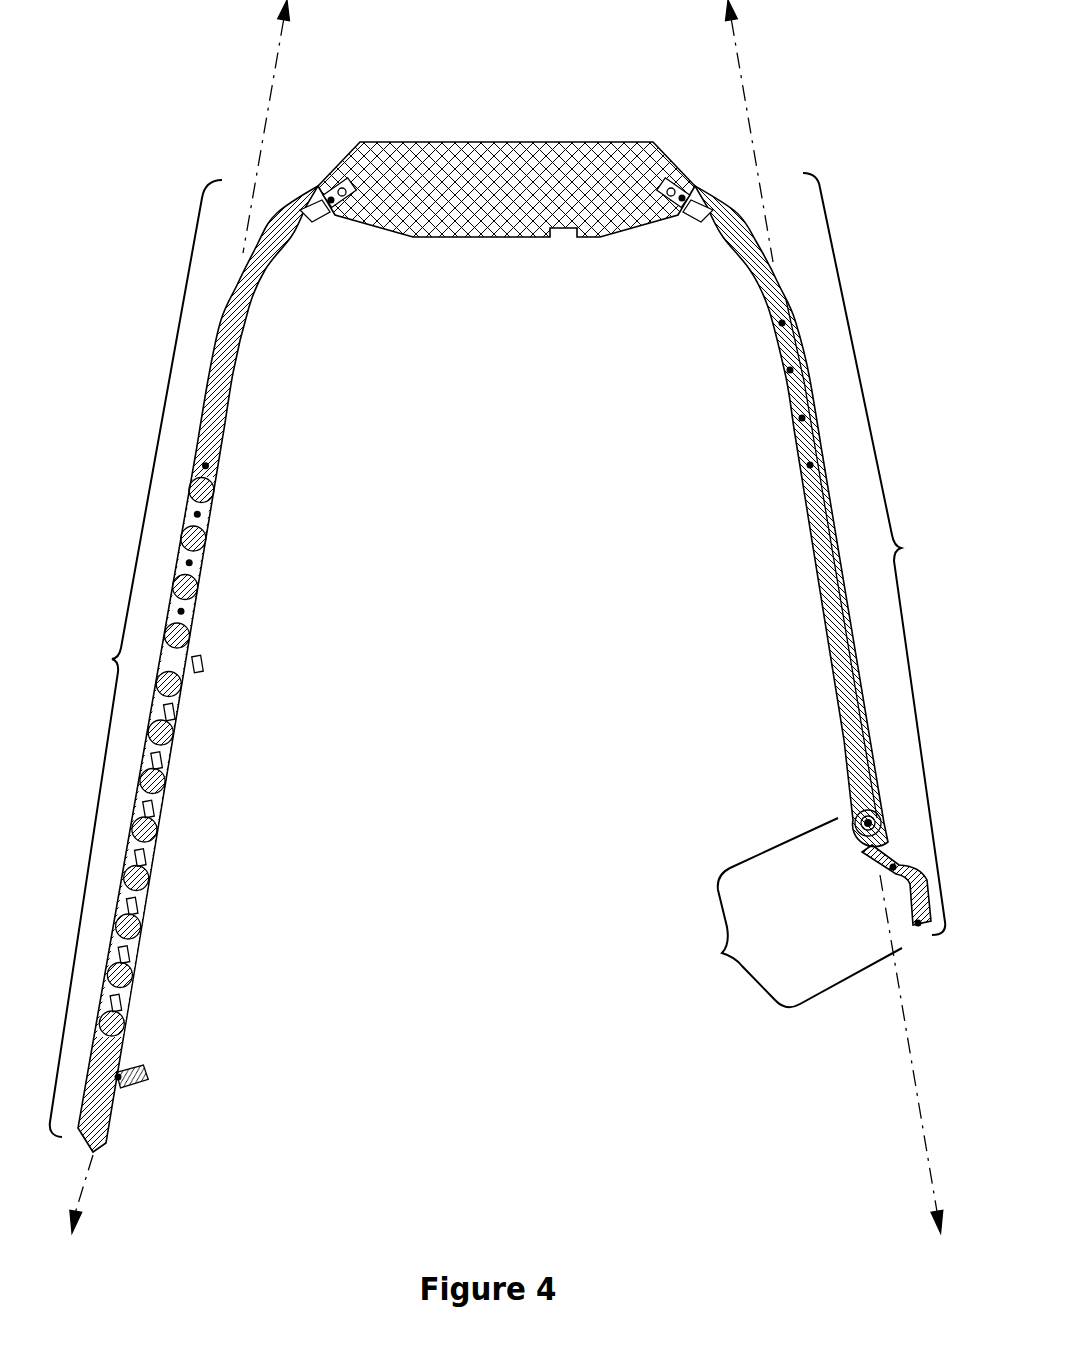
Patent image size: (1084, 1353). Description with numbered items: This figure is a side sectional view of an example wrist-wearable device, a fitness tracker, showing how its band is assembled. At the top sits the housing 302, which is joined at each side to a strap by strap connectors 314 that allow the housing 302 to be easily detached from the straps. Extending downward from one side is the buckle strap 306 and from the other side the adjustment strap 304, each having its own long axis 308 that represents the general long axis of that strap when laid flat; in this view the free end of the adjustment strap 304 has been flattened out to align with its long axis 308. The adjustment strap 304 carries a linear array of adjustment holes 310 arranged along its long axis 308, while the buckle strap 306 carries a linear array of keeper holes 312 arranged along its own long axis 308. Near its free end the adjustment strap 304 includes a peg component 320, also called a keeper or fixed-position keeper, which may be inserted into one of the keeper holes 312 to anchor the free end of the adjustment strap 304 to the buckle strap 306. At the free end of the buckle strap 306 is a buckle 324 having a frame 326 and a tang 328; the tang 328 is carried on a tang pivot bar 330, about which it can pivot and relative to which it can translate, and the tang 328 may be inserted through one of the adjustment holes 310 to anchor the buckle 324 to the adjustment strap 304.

The housing 302 is at (508, 187).
The adjustment strap 304 is at (184, 666).
The buckle strap 306 is at (827, 554).
The long axis 308 is at (270, 92).
The adjustment holes 310 is at (181, 611).
The keeper holes 312 is at (810, 465).
The strap connectors 314 is at (331, 200).
The peg component 320 is at (118, 1077).
The buckle 324 is at (794, 912).
The frame 326 is at (918, 923).
The tang 328 is at (893, 867).
The tang pivot bar 330 is at (868, 823).